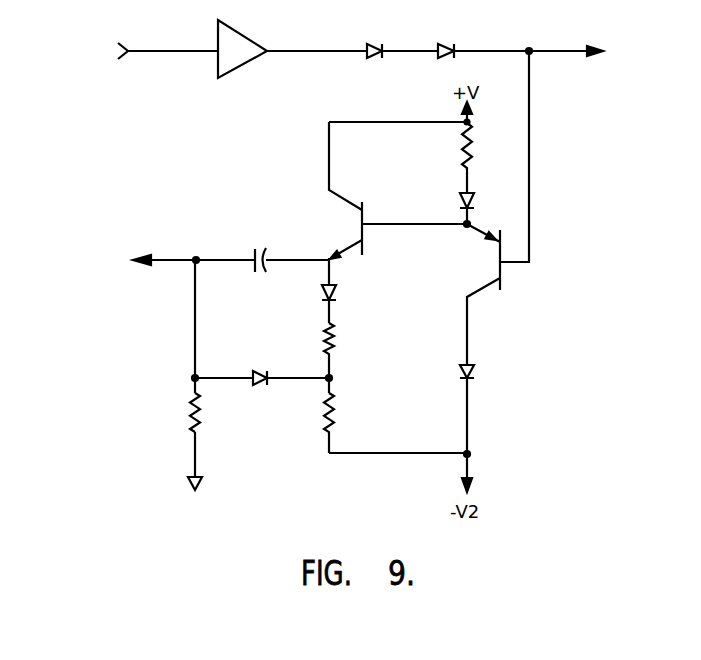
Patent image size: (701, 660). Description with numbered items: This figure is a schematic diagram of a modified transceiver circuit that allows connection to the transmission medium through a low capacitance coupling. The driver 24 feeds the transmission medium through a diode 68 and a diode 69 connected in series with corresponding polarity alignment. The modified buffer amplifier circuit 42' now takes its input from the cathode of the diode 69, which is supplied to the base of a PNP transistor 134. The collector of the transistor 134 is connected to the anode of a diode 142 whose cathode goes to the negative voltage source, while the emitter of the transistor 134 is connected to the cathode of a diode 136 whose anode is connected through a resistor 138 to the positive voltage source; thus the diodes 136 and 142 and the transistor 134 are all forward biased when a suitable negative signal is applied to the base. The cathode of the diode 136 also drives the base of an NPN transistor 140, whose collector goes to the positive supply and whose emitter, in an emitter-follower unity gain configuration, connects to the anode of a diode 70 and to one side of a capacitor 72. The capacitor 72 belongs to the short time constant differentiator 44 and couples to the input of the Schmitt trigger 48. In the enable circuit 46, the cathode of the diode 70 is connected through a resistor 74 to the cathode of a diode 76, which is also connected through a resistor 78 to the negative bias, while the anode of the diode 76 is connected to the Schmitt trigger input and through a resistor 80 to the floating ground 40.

The driver 24 is at (246, 33).
The diode 68 is at (377, 44).
The diode 69 is at (449, 44).
The resistor 138 is at (474, 151).
The diode 136 is at (475, 198).
The PNP transistor 134 is at (493, 236).
The NPN transistor 140 is at (363, 208).
The short time constant differentiator 44 is at (292, 254).
The capacitor 72 is at (266, 268).
The Schmitt trigger 48 is at (177, 261).
The diode 70 is at (338, 297).
The resistor 74 is at (338, 337).
The resistor 78 is at (338, 408).
The enable circuit 46 is at (383, 355).
The buffer amplifier circuit 42' is at (488, 252).
The diode 142 is at (476, 372).
The diode 76 is at (260, 387).
The resistor 80 is at (200, 415).
The floating ground 40 is at (198, 466).